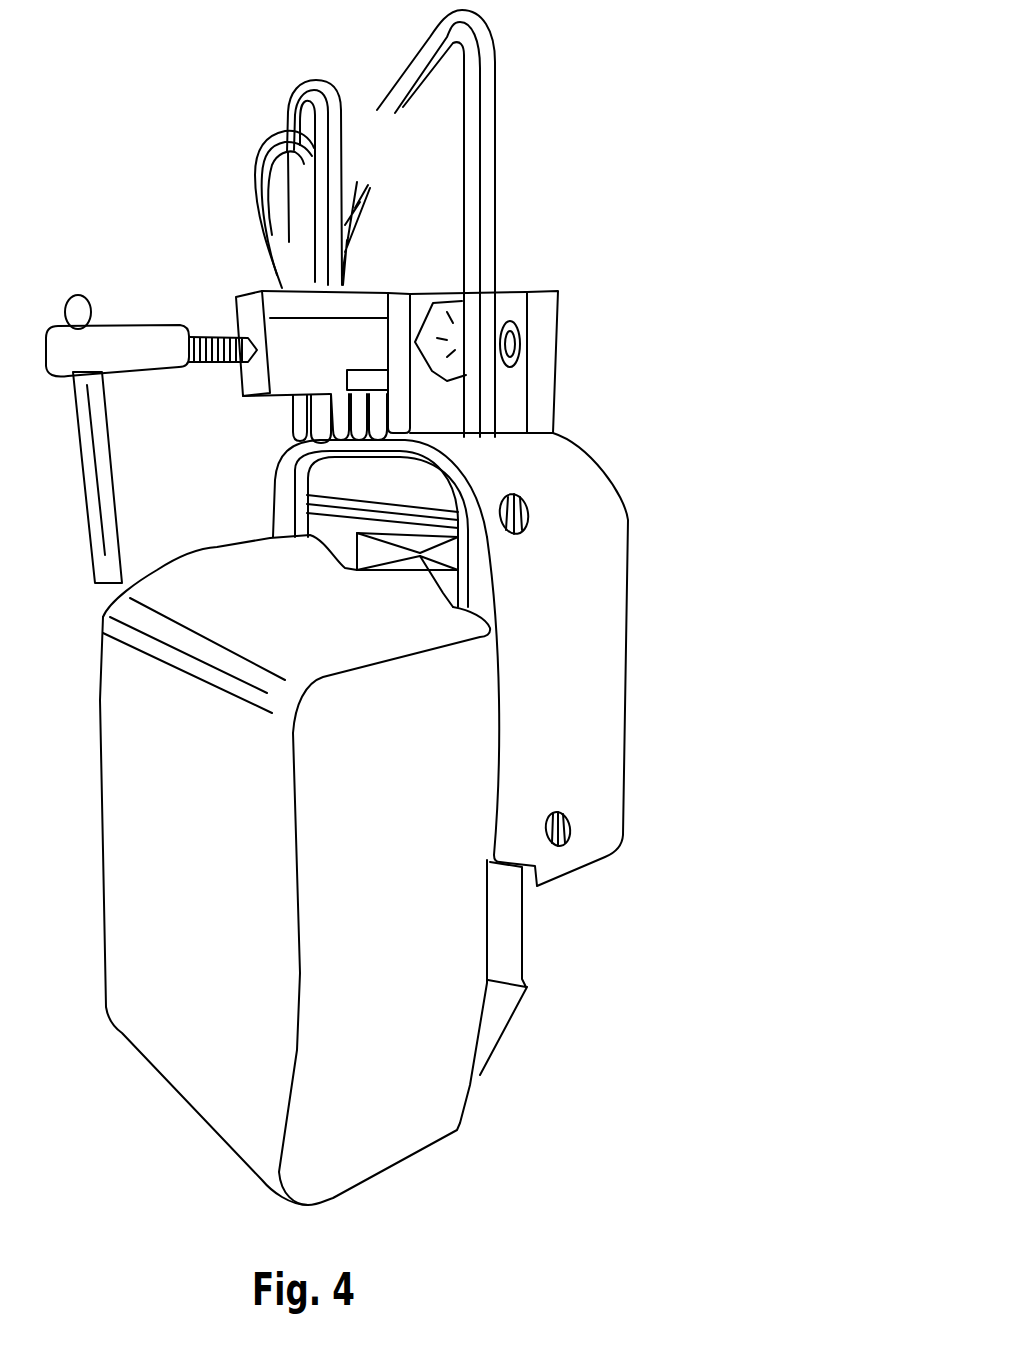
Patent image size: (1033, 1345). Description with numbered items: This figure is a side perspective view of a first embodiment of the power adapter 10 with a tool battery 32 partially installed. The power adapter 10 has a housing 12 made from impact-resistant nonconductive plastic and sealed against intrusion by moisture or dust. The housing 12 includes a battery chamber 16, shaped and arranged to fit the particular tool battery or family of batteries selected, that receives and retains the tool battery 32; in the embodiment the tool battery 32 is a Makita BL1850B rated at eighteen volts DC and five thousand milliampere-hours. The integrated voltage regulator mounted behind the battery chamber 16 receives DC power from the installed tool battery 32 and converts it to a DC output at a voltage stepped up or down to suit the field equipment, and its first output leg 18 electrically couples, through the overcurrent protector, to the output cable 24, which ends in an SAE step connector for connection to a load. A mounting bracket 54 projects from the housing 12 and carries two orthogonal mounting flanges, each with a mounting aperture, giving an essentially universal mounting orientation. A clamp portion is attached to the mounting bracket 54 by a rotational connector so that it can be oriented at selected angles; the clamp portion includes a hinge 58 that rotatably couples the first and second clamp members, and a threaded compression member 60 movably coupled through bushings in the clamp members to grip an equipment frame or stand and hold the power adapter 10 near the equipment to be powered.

The power adapter 10 is at (753, 215).
The housing 12 is at (640, 527).
The battery chamber 16 is at (440, 582).
The first output leg 18 is at (493, 433).
The output cable 24 is at (257, 167).
The tool battery 32 is at (499, 1074).
The mounting bracket 54 is at (523, 235).
The hinge 58 is at (380, 263).
The threaded compression member 60 is at (183, 368).